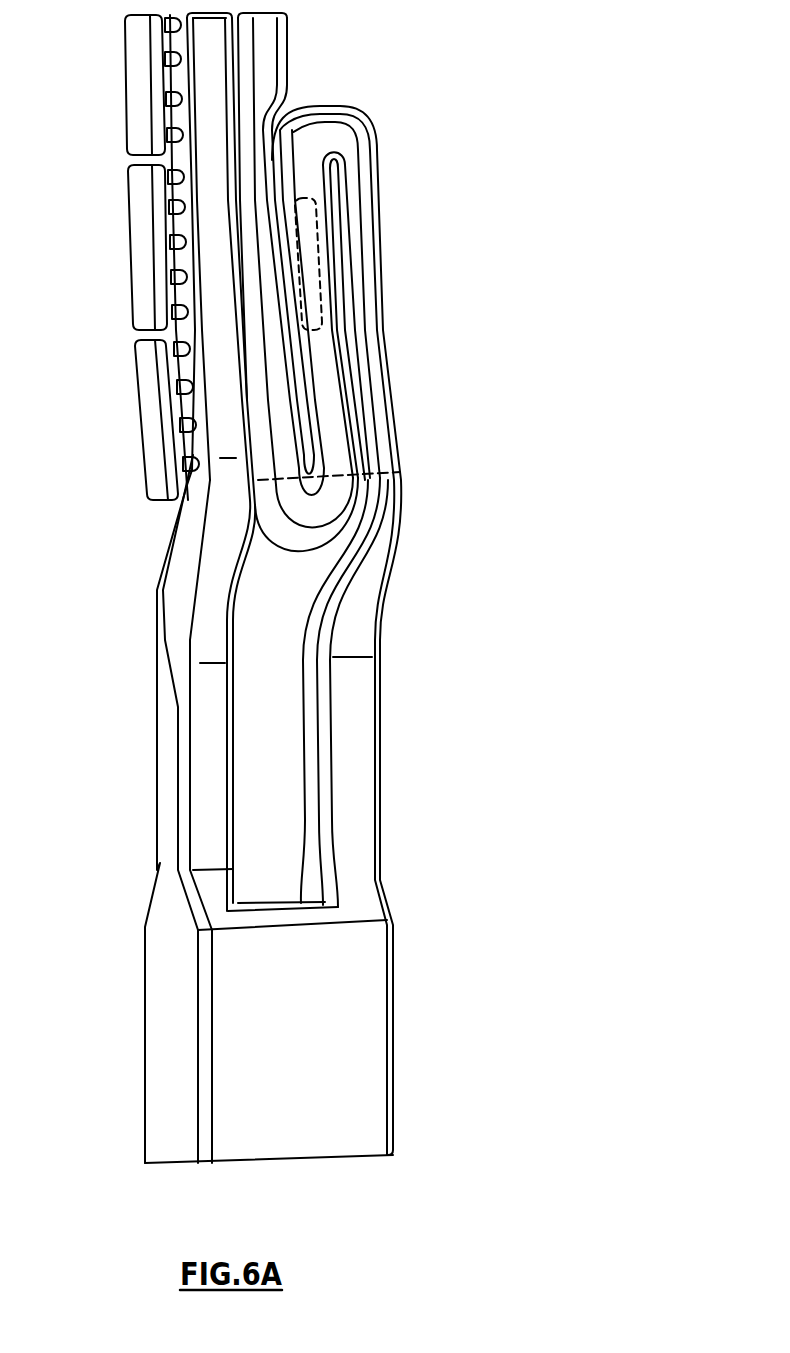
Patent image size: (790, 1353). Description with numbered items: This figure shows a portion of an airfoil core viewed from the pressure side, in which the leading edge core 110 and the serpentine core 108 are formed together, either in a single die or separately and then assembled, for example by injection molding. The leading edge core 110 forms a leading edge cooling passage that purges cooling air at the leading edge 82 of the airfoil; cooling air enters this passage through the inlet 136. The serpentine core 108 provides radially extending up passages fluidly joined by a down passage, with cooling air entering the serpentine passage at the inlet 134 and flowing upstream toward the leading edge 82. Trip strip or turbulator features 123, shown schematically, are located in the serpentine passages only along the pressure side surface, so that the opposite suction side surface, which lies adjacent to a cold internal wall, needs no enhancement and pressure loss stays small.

The leading edge 82 is at (145, 279).
The leading edge core 110 is at (205, 443).
The serpentine core 108 is at (375, 218).
The trip strip or turbulator features 123 is at (305, 217).
The inlet 136 is at (215, 890).
The inlet 134 is at (367, 893).